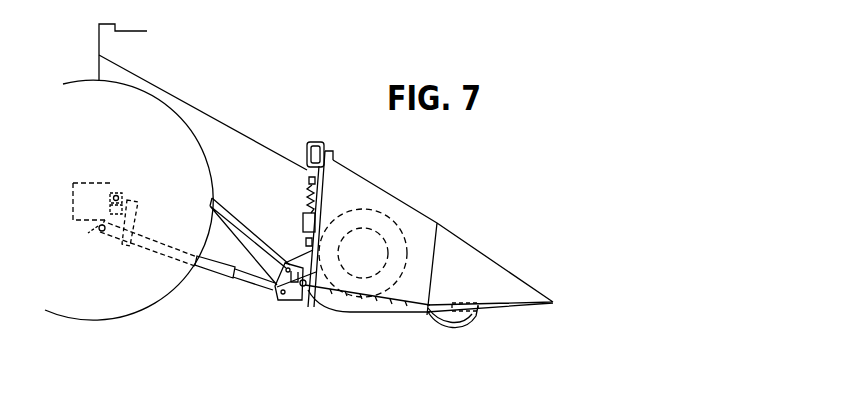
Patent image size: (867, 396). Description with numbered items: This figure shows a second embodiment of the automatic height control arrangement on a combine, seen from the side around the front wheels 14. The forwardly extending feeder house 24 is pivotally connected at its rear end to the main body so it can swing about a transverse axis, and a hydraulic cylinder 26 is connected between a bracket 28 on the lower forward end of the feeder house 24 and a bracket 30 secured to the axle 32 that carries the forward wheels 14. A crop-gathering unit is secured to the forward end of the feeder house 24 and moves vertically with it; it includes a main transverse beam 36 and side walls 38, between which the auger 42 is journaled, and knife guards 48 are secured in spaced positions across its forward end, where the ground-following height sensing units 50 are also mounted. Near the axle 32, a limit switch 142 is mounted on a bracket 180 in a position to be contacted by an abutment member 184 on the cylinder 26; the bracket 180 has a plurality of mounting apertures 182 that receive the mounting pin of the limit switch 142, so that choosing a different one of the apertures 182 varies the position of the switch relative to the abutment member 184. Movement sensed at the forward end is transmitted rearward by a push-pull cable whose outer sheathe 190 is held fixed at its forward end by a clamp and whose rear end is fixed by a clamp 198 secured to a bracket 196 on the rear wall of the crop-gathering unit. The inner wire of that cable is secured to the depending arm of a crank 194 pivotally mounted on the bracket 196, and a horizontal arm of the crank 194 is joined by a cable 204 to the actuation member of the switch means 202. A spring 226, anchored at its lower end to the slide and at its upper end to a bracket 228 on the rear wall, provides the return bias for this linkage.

The front wheels 14 is at (158, 302).
The feeder house 24 is at (211, 117).
The hydraulic cylinders 26 is at (222, 276).
The brackets 28 is at (268, 258).
The brackets 30 is at (96, 229).
The axle 32 is at (90, 179).
The main transverse beam 36 is at (317, 141).
The side walls 38 is at (415, 209).
The auger 42 is at (398, 275).
The knife guards 48 is at (437, 306).
The height sensing units 50 is at (481, 328).
The limit switch 142 is at (135, 204).
The bracket 180 is at (112, 183).
The mounting apertures 182 is at (123, 186).
The abutment member 184 is at (134, 221).
The outer sheathe 190 is at (412, 311).
The crank 194 is at (277, 296).
The bracket 196 is at (314, 262).
The clamp 198 is at (312, 306).
The switch means 202 is at (318, 214).
The cable 204 is at (305, 241).
The spring 226 is at (307, 200).
The bracket 228 is at (309, 181).